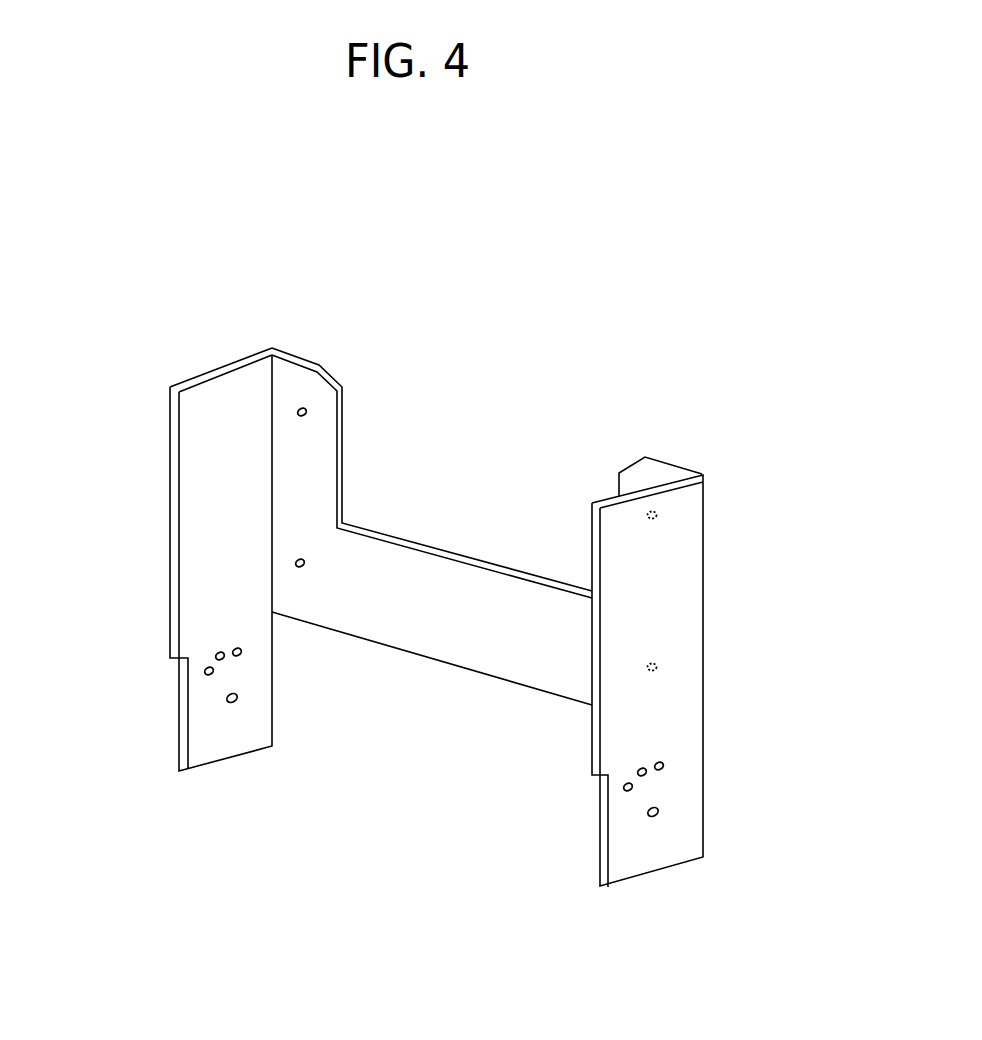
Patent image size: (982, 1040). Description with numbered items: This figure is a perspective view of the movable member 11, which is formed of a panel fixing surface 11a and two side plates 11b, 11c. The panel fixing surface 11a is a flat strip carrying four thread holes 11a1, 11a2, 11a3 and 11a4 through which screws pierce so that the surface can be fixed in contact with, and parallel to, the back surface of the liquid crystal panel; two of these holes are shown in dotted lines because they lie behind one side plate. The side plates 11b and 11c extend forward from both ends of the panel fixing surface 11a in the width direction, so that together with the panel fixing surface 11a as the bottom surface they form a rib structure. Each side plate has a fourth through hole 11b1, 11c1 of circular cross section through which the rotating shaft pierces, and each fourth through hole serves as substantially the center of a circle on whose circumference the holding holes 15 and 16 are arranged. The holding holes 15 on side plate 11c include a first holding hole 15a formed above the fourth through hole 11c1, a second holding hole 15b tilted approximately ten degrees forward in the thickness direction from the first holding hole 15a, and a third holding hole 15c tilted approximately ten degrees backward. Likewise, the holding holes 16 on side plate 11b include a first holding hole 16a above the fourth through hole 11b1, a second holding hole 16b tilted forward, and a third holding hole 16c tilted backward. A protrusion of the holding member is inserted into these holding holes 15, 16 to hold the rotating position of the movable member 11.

The movable member 11 is at (438, 640).
The panel fixing surface 11a is at (302, 355).
The thread hole 11a1 is at (306, 411).
The thread hole 11a2 is at (303, 560).
The thread hole 11a3 is at (657, 517).
The thread hole 11a4 is at (657, 666).
The side plate 11b is at (217, 368).
The fourth through hole 11b1 is at (241, 769).
The side plate 11c is at (658, 482).
The fourth through hole 11c1 is at (656, 818).
The holding holes 15 is at (727, 776).
The first holding hole 15a is at (645, 770).
The second holding hole 15b is at (630, 783).
The third holding hole 15c is at (715, 806).
The holding holes 16 is at (143, 645).
The first holding hole 16a is at (224, 652).
The second holding hole 16b is at (156, 695).
The third holding hole 16c is at (236, 646).